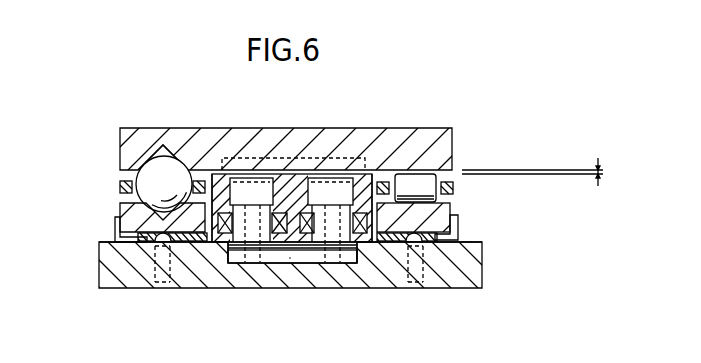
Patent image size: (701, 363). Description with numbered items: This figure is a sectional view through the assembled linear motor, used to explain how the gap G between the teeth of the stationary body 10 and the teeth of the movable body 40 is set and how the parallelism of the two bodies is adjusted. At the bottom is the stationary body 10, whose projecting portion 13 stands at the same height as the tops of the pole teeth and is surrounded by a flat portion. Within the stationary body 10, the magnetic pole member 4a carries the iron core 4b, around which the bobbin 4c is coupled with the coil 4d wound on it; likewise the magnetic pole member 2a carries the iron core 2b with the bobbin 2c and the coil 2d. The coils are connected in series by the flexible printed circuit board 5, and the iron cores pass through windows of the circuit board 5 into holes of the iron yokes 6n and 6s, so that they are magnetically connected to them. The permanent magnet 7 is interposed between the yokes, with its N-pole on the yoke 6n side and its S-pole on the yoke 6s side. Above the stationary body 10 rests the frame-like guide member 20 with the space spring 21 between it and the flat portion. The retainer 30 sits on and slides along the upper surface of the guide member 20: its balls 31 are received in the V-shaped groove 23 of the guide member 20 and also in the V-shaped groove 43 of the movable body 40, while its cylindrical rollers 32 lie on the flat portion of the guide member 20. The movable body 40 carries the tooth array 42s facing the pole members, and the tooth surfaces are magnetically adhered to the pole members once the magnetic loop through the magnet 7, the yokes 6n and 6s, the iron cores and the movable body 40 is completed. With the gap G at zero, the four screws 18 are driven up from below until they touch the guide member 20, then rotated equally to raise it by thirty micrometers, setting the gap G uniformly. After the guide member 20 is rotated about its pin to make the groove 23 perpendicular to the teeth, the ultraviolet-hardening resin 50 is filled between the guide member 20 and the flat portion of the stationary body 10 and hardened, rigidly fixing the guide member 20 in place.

The stationary body 10 is at (478, 283).
The resin 50 is at (139, 243).
The screws 18 is at (160, 283).
The permanent magnet 7 is at (293, 265).
The movable body 40 is at (395, 132).
The tooth array 42s is at (232, 158).
The groove 43 is at (158, 147).
The balls 31 is at (148, 174).
The retainer 30 is at (121, 187).
The cylindrical rollers 32 is at (428, 176).
The gap G is at (536, 167).
The groove 23 is at (145, 208).
The guide member 20 is at (445, 214).
The space spring 21 is at (118, 222).
The flexible printed circuit board 5 is at (360, 245).
The projecting portion 13 is at (298, 190).
The magnetic pole member 4a is at (248, 190).
The iron core 4b is at (249, 262).
The bobbin 4c is at (267, 243).
The coil 4d is at (216, 243).
The iron yoke 6s is at (235, 260).
The magnetic pole member 2a is at (323, 190).
The iron core 2b is at (330, 265).
The bobbin 2c is at (322, 263).
The coil 2d is at (378, 242).
The iron yoke 6n is at (350, 262).